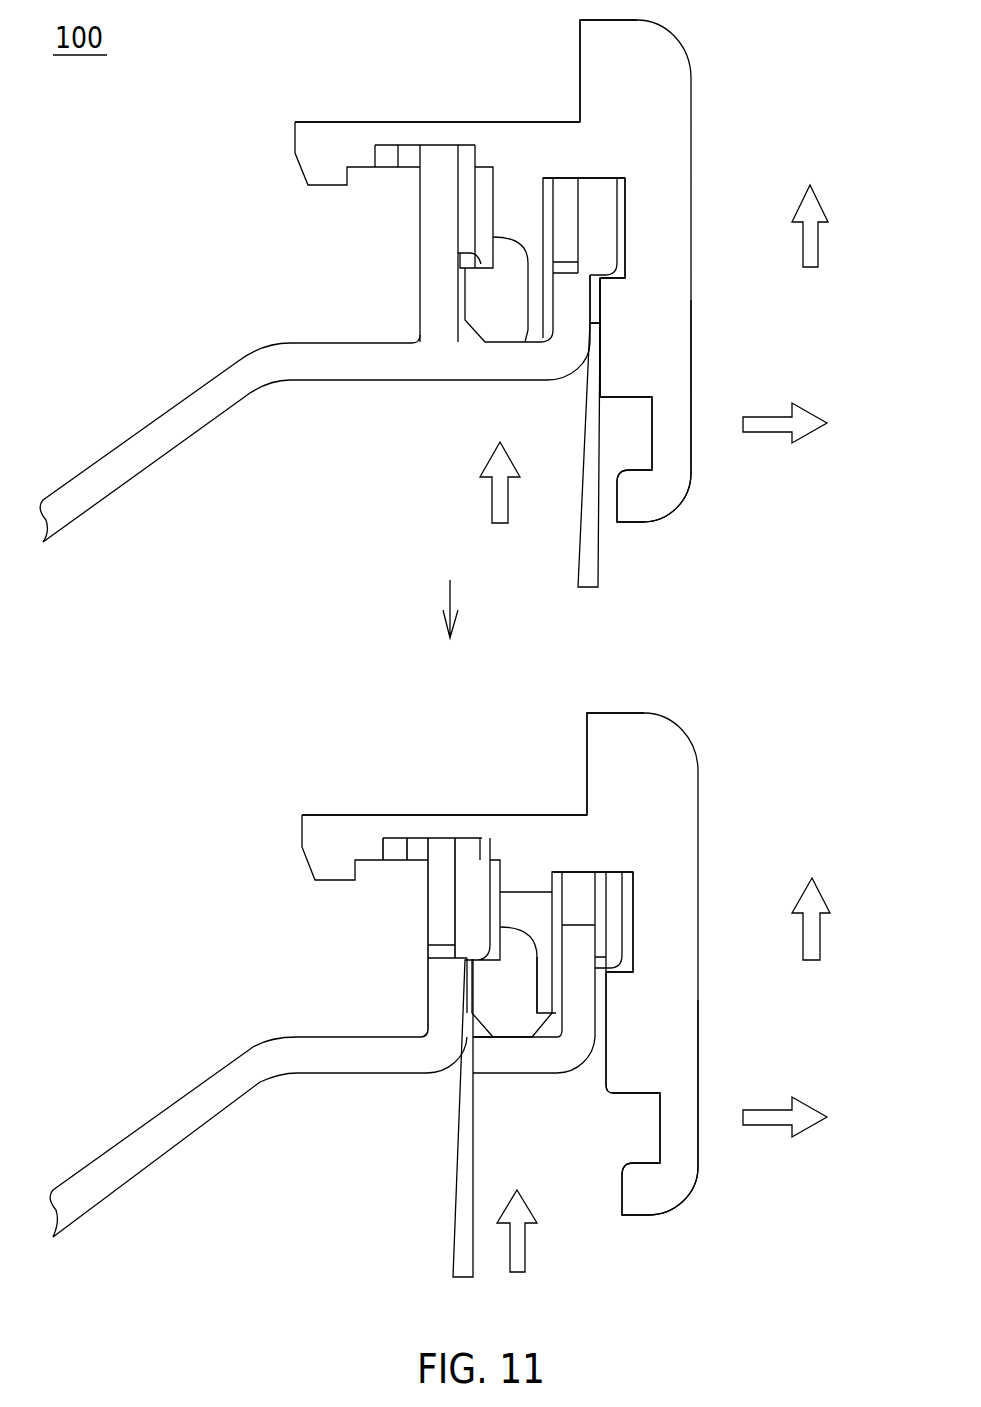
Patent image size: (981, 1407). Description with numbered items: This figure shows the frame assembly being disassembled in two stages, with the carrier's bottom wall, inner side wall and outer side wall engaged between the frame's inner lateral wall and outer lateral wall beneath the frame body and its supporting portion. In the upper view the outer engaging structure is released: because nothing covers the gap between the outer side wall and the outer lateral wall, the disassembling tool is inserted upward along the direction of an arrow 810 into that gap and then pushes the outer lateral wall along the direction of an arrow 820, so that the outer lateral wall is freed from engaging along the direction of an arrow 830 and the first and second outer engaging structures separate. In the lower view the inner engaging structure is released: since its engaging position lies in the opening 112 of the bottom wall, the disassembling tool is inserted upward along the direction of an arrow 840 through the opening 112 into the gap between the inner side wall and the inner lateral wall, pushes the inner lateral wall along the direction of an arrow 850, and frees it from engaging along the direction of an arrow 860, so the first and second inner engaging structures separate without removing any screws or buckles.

The opening 112 is at (510, 1072).
The arrow 810 is at (492, 502).
The arrow 820 is at (767, 432).
The arrow 830 is at (818, 245).
The arrow 840 is at (527, 1250).
The arrow 850 is at (767, 1125).
The arrow 860 is at (820, 937).